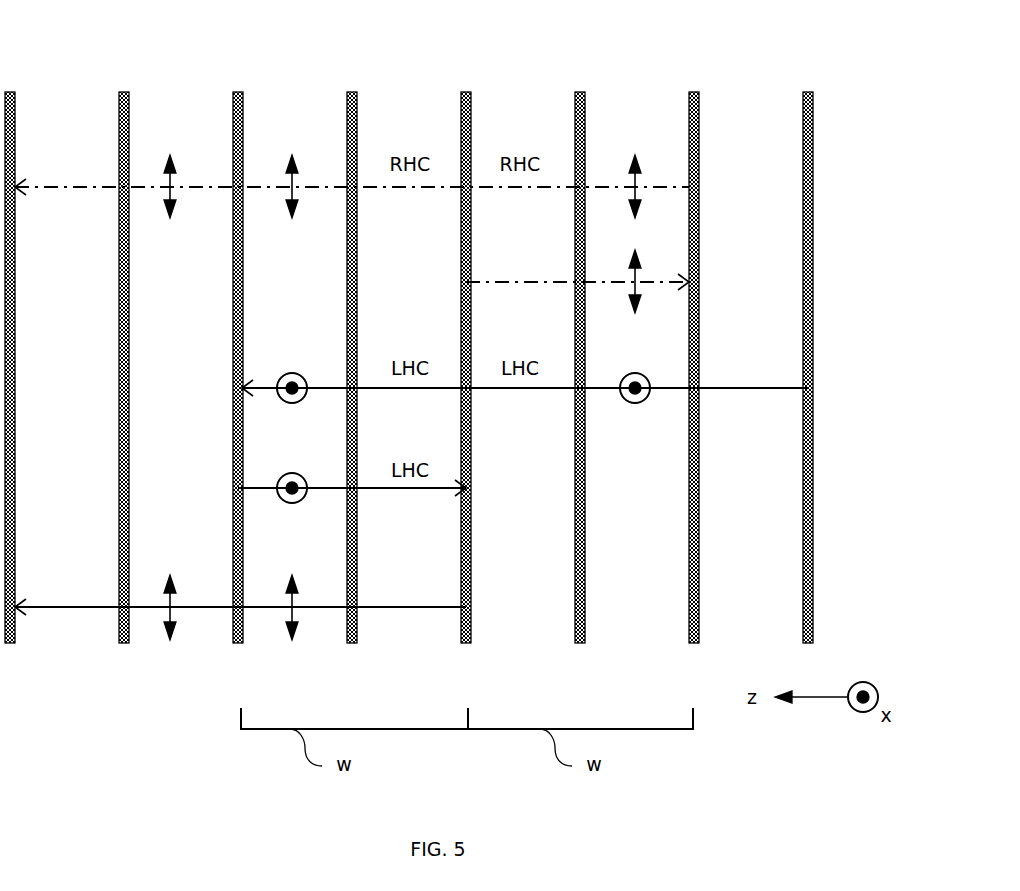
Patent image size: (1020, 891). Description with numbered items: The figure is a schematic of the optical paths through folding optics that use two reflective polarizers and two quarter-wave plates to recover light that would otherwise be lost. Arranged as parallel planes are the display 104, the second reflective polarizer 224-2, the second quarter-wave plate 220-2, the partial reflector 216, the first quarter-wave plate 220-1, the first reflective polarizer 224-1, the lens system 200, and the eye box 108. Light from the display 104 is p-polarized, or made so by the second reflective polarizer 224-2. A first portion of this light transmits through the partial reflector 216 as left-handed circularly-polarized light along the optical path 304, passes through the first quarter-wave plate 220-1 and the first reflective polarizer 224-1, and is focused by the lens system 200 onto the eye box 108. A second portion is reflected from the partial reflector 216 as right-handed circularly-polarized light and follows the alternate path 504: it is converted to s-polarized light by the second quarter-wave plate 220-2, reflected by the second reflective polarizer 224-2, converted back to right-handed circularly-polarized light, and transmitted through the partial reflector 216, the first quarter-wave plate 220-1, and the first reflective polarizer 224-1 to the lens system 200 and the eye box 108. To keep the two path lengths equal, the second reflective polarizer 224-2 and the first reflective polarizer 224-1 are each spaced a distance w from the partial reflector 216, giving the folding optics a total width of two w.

The eye box 108 is at (15, 92).
The lens system 200 is at (129, 92).
The first reflective polarizer 224-1 is at (243, 92).
The first quarter-wave plate 220-1 is at (357, 92).
The partial reflector 216 is at (471, 92).
The second quarter-wave plate 220-2 is at (585, 92).
The second reflective polarizer 224-2 is at (699, 92).
The display 104 is at (813, 92).
The optical path 304 is at (50, 607).
The alternate path 504 is at (653, 190).